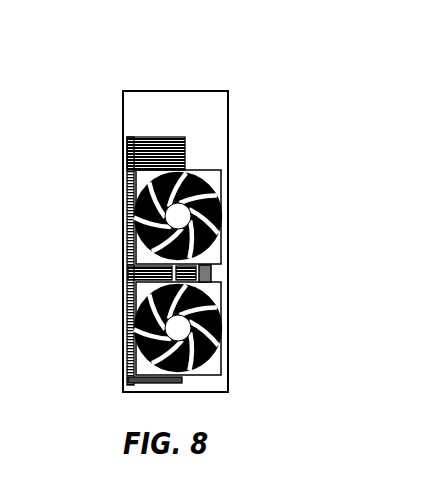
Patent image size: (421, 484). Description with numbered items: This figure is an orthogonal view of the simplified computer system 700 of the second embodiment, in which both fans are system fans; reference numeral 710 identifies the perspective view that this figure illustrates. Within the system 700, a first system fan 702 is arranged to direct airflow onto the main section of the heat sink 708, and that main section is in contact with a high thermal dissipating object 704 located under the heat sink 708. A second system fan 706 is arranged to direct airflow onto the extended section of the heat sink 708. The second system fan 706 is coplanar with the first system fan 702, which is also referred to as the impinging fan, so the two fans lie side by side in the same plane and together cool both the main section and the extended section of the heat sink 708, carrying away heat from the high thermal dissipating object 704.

The simplified computer system 700 is at (139, 90).
The perspective view 710 is at (200, 123).
The heat sink 708 is at (185, 155).
The first system fan 702 is at (127, 215).
The second system fan 706 is at (128, 325).
The high thermal dissipating object 704 is at (211, 274).